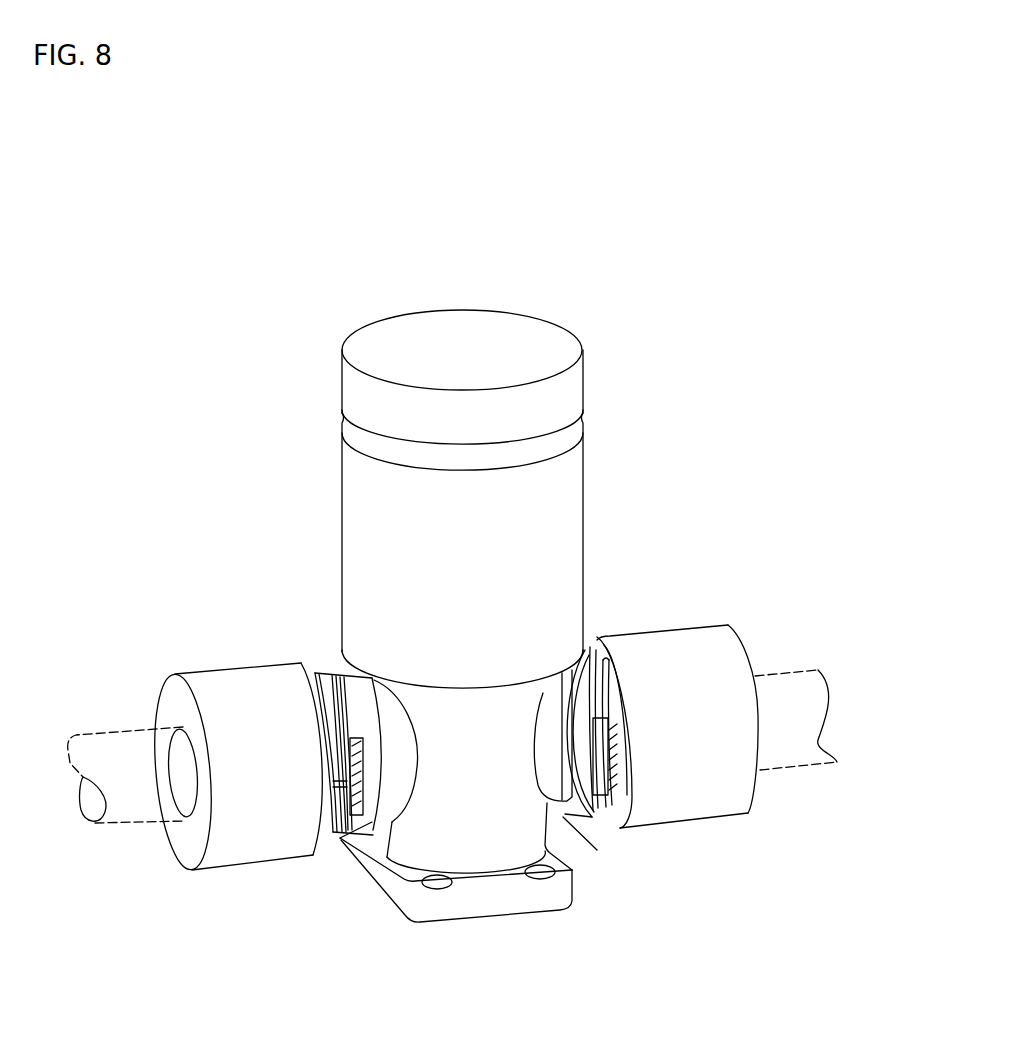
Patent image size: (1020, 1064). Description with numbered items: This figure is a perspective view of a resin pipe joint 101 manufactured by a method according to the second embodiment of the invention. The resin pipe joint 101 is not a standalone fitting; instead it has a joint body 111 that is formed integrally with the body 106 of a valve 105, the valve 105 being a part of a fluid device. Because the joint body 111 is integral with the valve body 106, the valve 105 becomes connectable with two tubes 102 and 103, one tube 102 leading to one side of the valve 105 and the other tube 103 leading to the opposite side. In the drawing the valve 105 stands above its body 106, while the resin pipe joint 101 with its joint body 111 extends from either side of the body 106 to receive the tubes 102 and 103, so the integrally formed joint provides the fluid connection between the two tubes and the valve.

The resin pipe joint 101 is at (205, 660).
The tube 102 is at (117, 828).
The tube 103 is at (814, 766).
The valve 105 is at (592, 327).
The body 106 is at (383, 680).
The joint body 111 is at (390, 848).